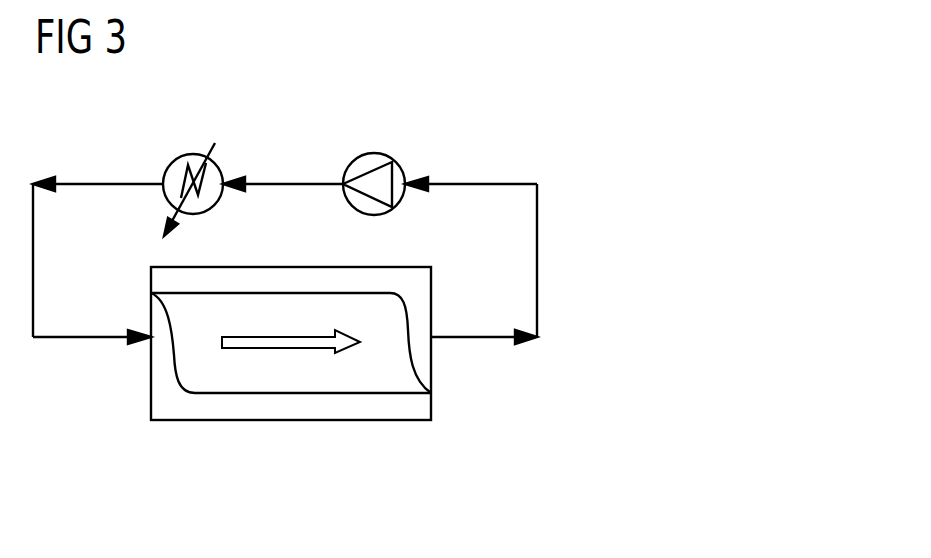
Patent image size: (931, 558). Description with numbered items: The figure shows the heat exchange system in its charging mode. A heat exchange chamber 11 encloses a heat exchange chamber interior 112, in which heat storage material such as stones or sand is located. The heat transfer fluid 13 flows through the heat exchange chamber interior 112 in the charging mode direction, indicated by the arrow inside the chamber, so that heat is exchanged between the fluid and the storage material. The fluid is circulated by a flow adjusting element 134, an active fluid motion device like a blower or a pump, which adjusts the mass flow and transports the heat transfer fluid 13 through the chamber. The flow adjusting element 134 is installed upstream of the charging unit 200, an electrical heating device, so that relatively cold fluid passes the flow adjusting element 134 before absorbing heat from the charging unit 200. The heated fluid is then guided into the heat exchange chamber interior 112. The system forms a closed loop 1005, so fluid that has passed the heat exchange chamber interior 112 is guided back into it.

The charging unit 200 is at (193, 154).
The flow adjusting element 134 is at (382, 154).
The closed loop 1005 is at (538, 262).
The heat exchange chamber 11 is at (432, 365).
The heat exchange chamber interior 112 is at (152, 398).
The heat transfer fluid 13 is at (283, 348).